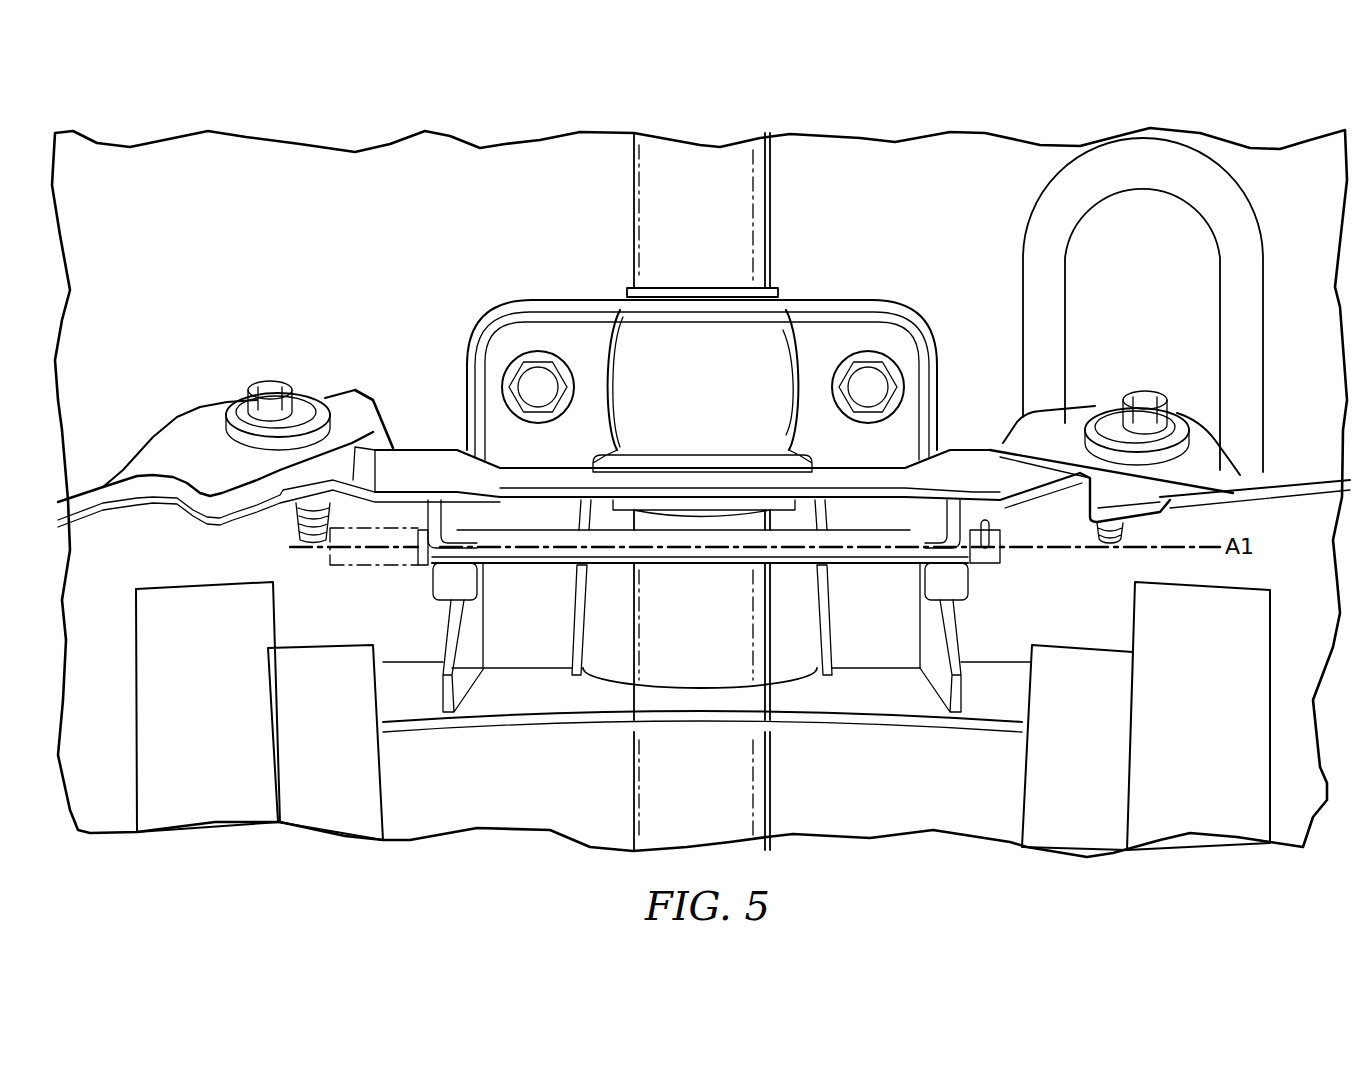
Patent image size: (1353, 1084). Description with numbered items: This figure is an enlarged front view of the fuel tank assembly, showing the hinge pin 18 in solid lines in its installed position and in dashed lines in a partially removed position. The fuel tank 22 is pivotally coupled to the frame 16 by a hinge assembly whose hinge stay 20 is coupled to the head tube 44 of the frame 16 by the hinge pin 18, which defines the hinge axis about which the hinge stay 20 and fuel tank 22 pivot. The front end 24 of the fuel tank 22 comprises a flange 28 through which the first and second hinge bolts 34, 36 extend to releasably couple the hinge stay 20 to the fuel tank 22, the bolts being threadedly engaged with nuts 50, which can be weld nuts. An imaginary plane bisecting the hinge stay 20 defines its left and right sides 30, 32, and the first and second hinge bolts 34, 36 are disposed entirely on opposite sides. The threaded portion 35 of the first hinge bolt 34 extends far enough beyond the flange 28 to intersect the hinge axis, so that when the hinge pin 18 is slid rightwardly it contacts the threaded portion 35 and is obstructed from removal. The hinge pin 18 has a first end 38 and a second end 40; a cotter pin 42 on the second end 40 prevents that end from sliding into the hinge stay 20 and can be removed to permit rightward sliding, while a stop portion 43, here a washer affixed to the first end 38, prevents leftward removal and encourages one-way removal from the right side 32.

The frame 16 is at (412, 690).
The hinge pin 18 is at (709, 560).
The hinge stay 20 is at (585, 480).
The fuel tank 22 is at (526, 170).
The front end 24 is at (845, 286).
The flange 28 is at (1200, 437).
The left side 30 is at (977, 470).
The right side 32 is at (428, 470).
The first hinge bolt 34 is at (270, 392).
The threaded portion 35 is at (297, 540).
The second hinge bolt 36 is at (1146, 392).
The first end 38 is at (537, 568).
The second end 40 is at (867, 568).
The cotter pin 42 is at (1001, 541).
The stop portion 43 is at (418, 560).
The head tube 44 is at (698, 345).
The nuts 50 is at (300, 512).